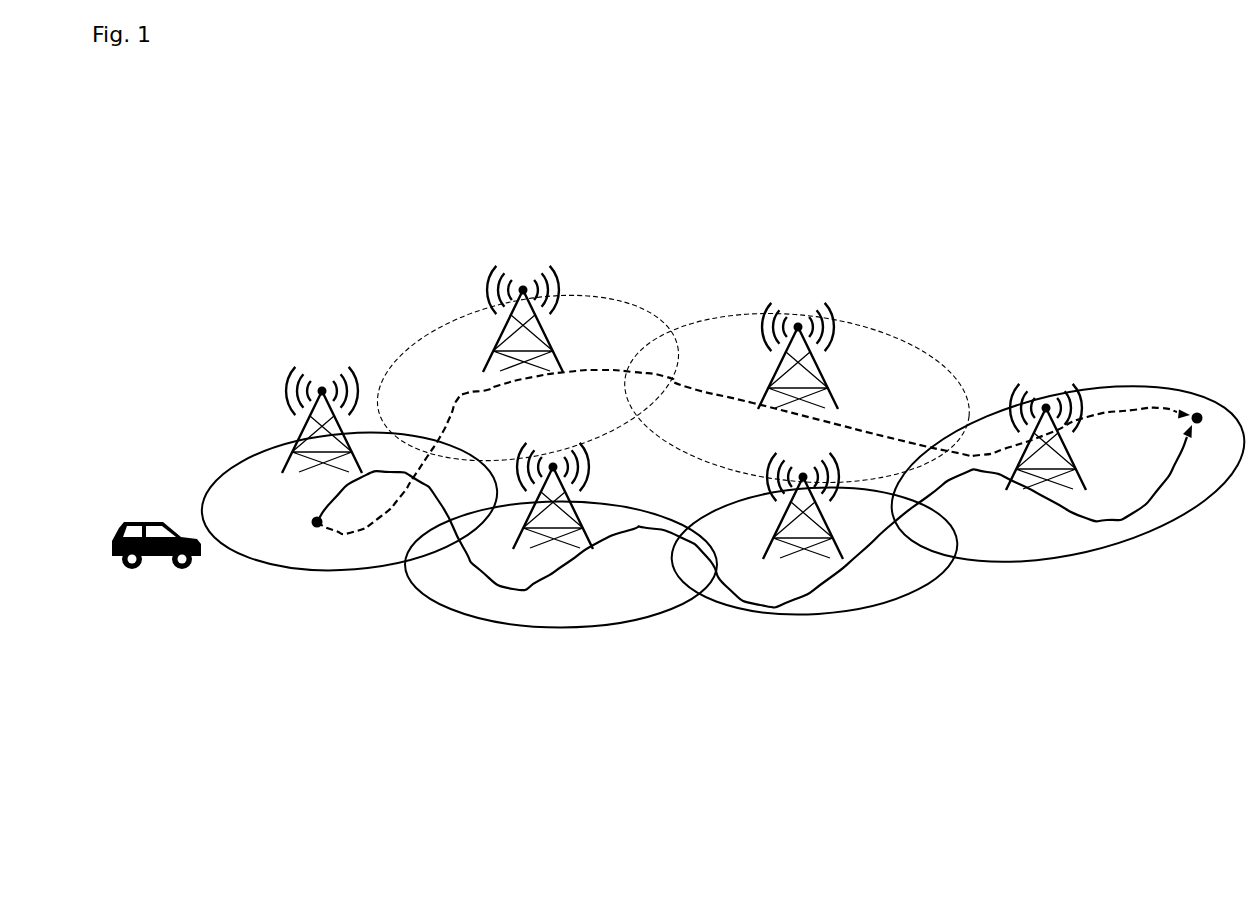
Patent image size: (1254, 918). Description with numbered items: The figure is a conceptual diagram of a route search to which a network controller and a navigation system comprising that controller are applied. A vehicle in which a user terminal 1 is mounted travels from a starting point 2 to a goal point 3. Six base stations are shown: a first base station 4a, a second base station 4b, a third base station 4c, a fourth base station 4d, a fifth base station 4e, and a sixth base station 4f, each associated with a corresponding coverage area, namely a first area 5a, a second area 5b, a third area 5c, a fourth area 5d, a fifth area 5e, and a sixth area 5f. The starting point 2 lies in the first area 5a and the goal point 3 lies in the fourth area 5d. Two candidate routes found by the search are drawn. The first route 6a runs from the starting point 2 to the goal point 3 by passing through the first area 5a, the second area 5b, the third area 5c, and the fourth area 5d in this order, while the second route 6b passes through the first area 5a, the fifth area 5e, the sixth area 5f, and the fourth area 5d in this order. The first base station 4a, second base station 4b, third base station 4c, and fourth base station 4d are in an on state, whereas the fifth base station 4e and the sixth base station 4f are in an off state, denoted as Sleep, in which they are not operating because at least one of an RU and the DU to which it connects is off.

The user terminal 1 is at (137, 518).
The starting point 2 is at (312, 522).
The goal point 3 is at (1198, 426).
The first base station 4a is at (322, 386).
The second base station 4b is at (590, 550).
The third base station 4c is at (835, 555).
The fourth base station 4d is at (1046, 403).
The fifth base station 4e is at (523, 285).
The sixth base station 4f is at (797, 320).
The first area 5a is at (300, 575).
The second area 5b is at (483, 622).
The third area 5c is at (752, 617).
The fourth area 5d is at (1030, 563).
The fifth area 5e is at (407, 360).
The sixth area 5f is at (922, 357).
The first route 6a is at (1107, 522).
The second route 6b is at (1147, 405).